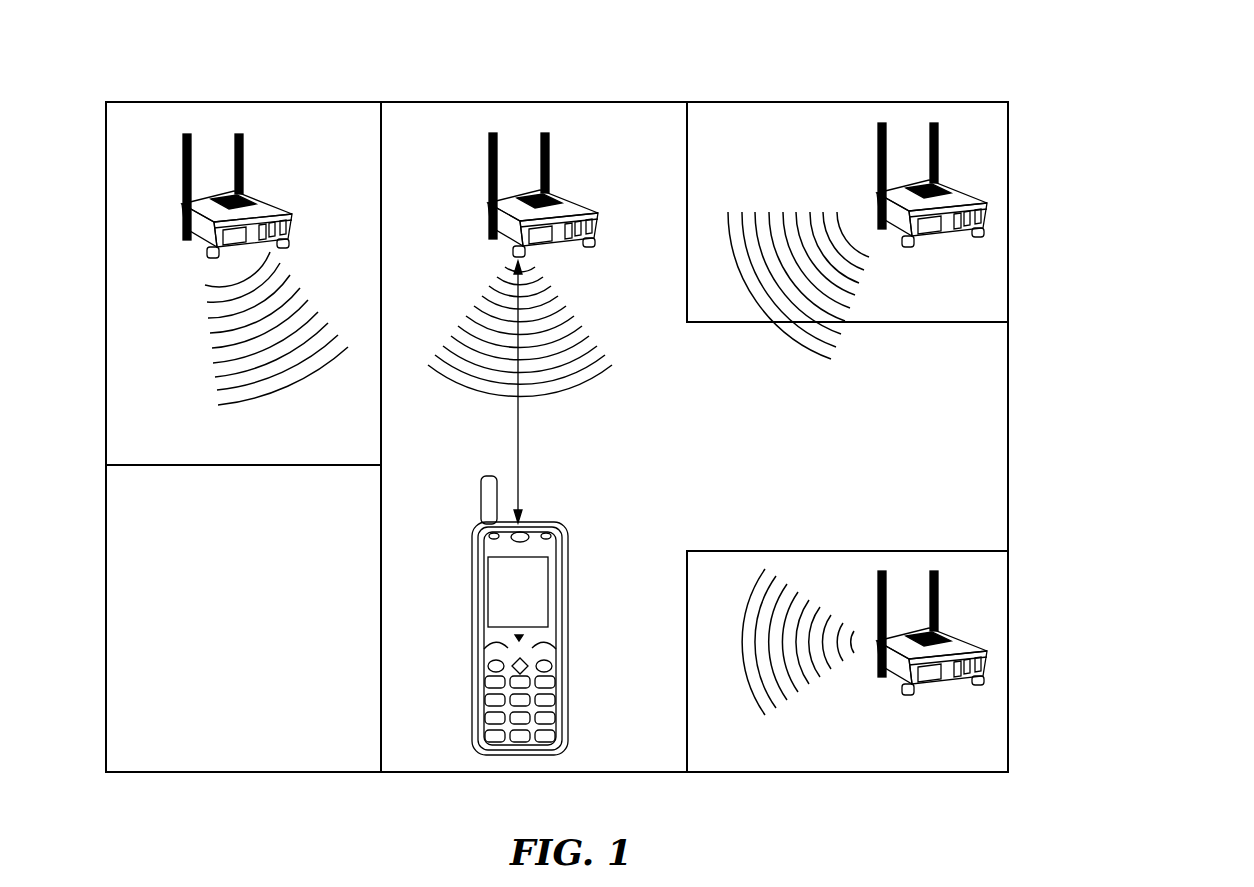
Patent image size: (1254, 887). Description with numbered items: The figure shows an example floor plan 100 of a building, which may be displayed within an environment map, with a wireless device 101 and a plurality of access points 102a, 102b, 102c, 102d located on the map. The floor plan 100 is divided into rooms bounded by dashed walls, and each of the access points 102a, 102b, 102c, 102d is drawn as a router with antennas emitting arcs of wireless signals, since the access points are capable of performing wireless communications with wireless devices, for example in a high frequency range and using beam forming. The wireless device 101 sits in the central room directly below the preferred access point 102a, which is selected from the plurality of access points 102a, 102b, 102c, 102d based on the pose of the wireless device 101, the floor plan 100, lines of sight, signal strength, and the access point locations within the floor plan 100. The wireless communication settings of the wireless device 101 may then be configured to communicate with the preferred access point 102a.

The floor plan 100 is at (670, 395).
The wireless device 101 is at (543, 615).
The preferred access point 102a is at (529, 328).
The access point 102b is at (265, 269).
The access point 102c is at (857, 239).
The access point 102d is at (872, 638).